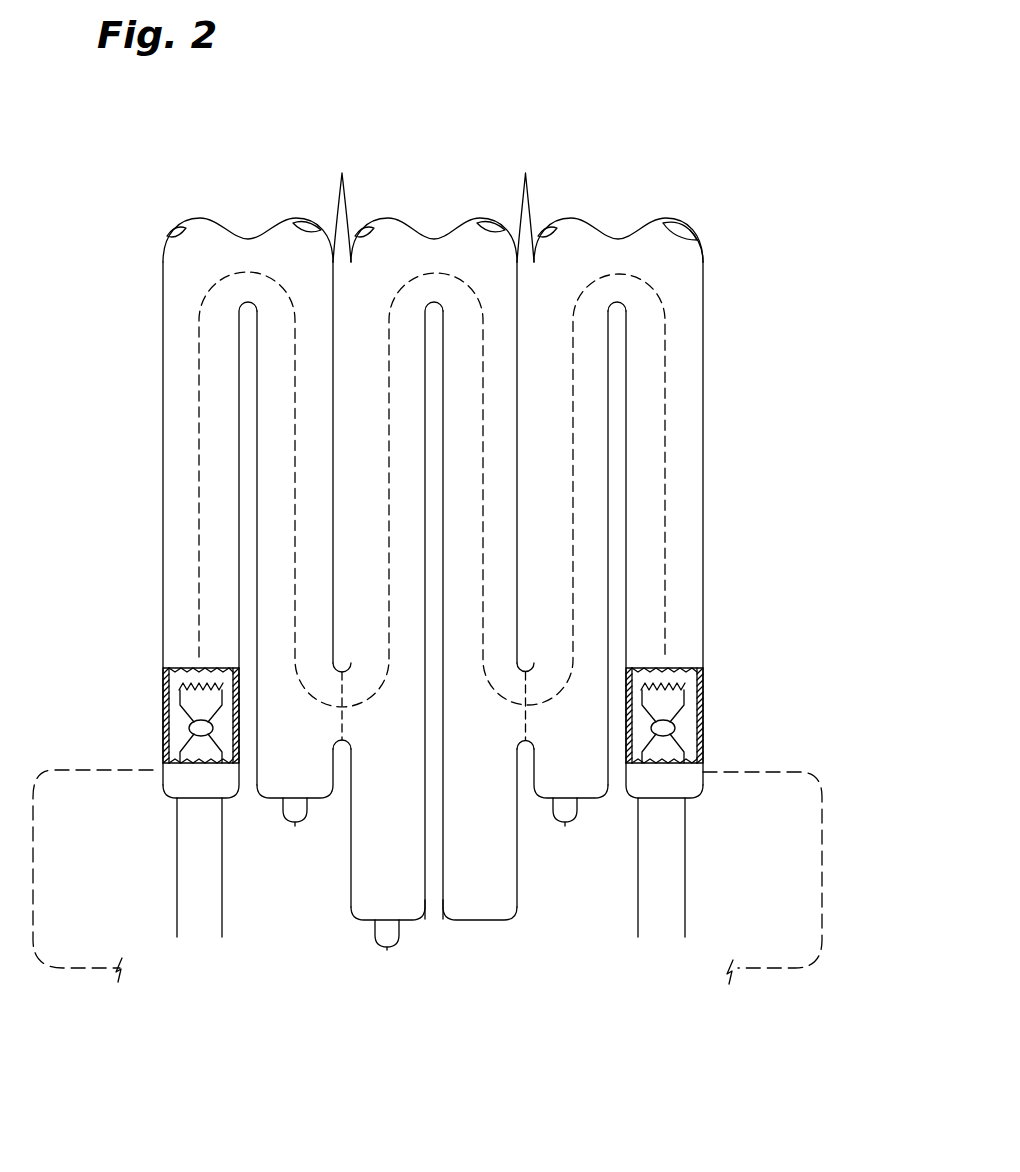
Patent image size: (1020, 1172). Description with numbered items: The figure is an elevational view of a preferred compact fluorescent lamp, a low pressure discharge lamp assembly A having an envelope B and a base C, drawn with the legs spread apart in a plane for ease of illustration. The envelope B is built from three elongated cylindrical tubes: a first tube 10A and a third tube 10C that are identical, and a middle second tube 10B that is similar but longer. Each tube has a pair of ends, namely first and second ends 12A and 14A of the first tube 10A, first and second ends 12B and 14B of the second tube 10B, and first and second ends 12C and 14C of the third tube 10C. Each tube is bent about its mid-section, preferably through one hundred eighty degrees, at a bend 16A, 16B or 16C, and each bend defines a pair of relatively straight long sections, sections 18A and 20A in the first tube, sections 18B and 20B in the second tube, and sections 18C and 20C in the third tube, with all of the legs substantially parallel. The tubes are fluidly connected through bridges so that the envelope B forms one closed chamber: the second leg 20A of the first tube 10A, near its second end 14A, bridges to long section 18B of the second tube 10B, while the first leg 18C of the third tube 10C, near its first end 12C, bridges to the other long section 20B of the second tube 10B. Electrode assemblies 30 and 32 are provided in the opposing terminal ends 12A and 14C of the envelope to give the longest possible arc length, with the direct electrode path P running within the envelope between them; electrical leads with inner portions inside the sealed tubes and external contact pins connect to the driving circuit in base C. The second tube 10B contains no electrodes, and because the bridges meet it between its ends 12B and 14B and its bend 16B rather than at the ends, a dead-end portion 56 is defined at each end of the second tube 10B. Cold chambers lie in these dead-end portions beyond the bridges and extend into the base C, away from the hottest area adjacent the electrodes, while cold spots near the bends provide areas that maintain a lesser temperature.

The low pressure discharge lamp assembly A is at (694, 95).
The envelope B is at (712, 253).
The base C is at (58, 972).
The discharge path P is at (197, 545).
The first tube 10A is at (215, 245).
The second tube 10B is at (393, 245).
The third tube 10C is at (583, 248).
The first end of first tube 12A is at (163, 792).
The first end of second tube 12B is at (360, 922).
The first end of third tube 12C is at (603, 800).
The second end of first tube 14A is at (257, 800).
The second end of second tube 14B is at (493, 922).
The second end of third tube 14C is at (703, 792).
The bend of first tube 16A is at (247, 238).
The bend of second tube 16B is at (433, 239).
The bend of third tube 16C is at (617, 240).
The first long section of first tube 18A is at (163, 368).
The first long section of second tube 18B is at (351, 460).
The first long section of third tube 18C is at (608, 380).
The second long section of first tube 20A is at (257, 427).
The second long section of second tube 20B is at (517, 468).
The second long section of third tube 20C is at (703, 415).
The electrode assembly 30 is at (165, 678).
The electrode assembly 32 is at (692, 678).
The dead-end portion 56 is at (467, 922).